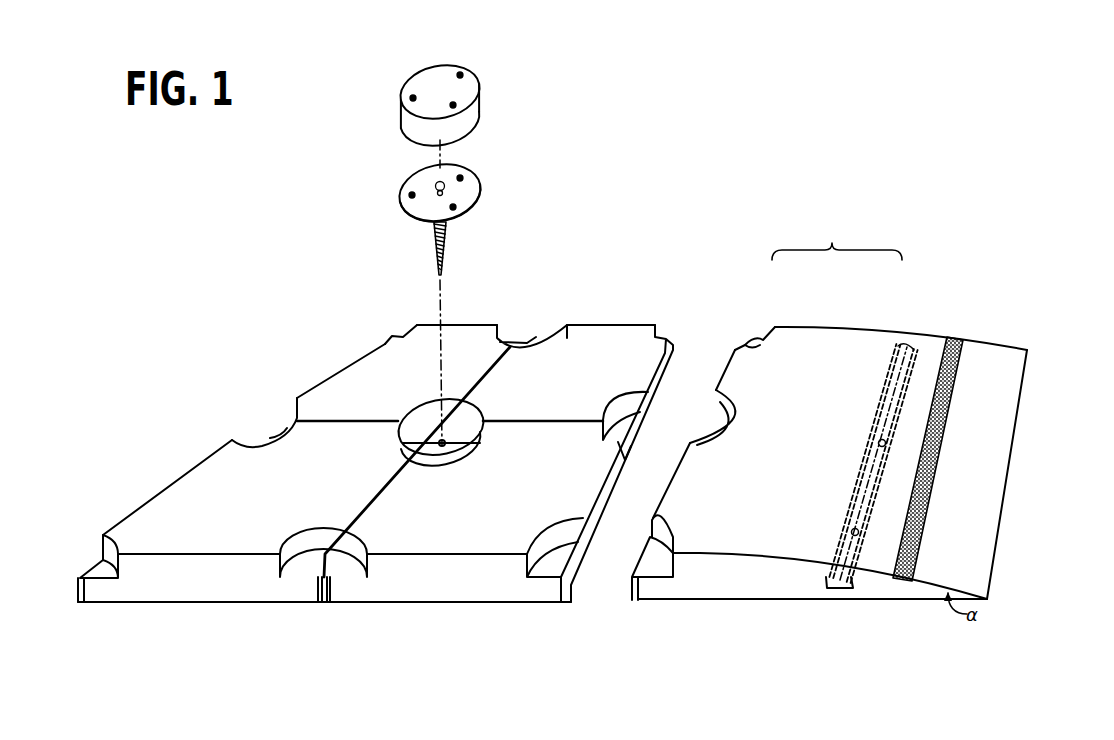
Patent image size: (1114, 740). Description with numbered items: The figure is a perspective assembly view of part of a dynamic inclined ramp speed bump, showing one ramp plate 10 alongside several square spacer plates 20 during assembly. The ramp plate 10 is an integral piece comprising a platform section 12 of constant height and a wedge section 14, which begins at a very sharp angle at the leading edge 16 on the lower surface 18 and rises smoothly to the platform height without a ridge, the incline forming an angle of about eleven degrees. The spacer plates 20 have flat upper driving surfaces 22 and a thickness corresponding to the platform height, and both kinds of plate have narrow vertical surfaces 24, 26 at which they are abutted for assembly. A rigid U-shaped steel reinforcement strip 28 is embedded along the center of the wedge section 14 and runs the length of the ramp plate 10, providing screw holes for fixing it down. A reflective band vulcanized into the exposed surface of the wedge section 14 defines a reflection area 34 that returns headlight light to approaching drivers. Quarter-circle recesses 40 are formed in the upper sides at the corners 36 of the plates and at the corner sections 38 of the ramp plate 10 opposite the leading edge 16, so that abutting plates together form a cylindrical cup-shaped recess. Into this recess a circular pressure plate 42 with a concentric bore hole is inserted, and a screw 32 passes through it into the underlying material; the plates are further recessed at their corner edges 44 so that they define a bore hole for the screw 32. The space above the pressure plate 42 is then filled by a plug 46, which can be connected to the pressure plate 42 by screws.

The ramp plate 10 is at (837, 226).
The platform section 12 is at (782, 350).
The wedge section 14 is at (873, 350).
The leading edge 16 is at (998, 530).
The lower surface 18 is at (442, 603).
The spacer plate 20 is at (577, 335).
The upper driving surface 22 is at (193, 490).
The narrow vertical surface 24 is at (688, 355).
The narrow vertical surface 26 is at (763, 580).
The reinforcement strip 28 is at (850, 588).
The screw 32 is at (430, 254).
The reflection area 34 is at (953, 383).
The corner 36 is at (75, 568).
The corner section 38 is at (750, 327).
The recess 40 is at (313, 568).
The pressure plate 42 is at (410, 207).
The corner edge 44 is at (572, 593).
The plug 46 is at (477, 107).